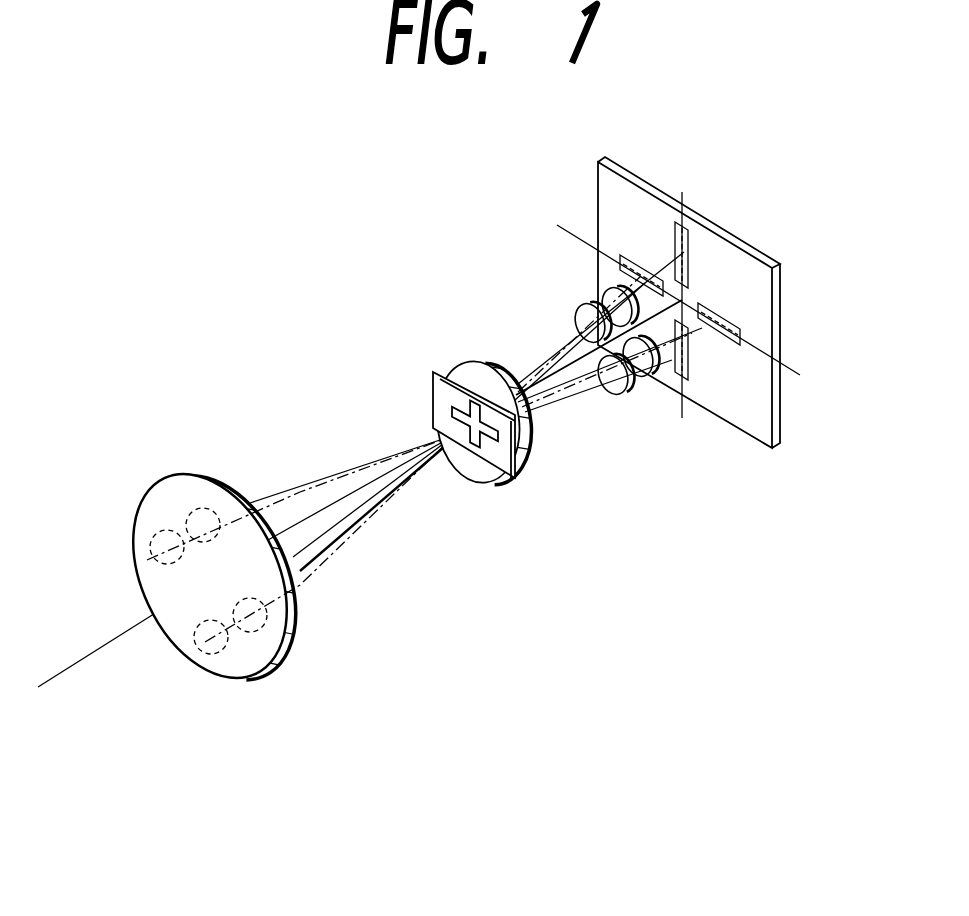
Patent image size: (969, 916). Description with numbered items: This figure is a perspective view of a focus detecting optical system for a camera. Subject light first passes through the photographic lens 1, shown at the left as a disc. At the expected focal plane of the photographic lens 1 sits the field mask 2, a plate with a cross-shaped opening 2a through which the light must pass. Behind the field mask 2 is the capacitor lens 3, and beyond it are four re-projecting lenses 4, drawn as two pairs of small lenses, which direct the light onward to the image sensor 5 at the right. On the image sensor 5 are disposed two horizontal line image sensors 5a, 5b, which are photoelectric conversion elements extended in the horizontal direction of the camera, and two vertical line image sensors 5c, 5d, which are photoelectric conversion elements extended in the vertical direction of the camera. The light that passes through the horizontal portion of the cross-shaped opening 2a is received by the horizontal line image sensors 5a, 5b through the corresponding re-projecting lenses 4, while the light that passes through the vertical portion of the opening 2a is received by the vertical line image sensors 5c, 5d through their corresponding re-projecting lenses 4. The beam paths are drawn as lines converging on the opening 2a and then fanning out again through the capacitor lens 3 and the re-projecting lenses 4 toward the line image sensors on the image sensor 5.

The photographic lens 1 is at (253, 667).
The field mask 2 is at (502, 462).
The cross-shaped opening 2a is at (452, 410).
The capacitor lens 3 is at (464, 368).
The re-projecting lenses 4 is at (612, 397).
The image sensor 5 is at (740, 238).
The horizontal line image sensor 5a is at (600, 228).
The horizontal line image sensor 5b is at (737, 322).
The vertical line image sensor 5c is at (678, 215).
The vertical line image sensor 5d is at (688, 385).